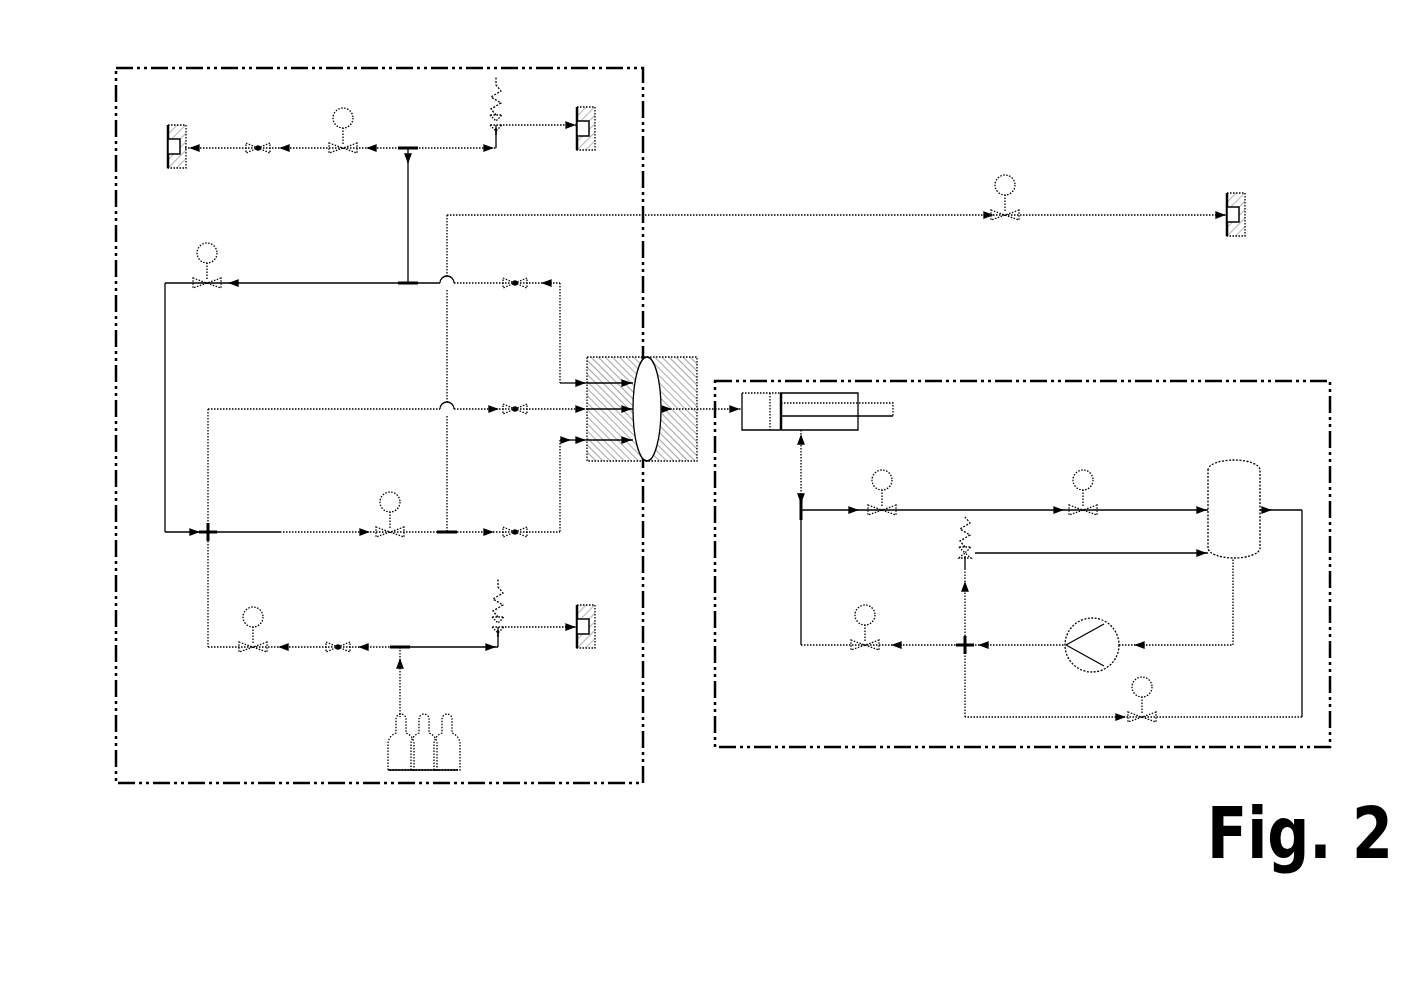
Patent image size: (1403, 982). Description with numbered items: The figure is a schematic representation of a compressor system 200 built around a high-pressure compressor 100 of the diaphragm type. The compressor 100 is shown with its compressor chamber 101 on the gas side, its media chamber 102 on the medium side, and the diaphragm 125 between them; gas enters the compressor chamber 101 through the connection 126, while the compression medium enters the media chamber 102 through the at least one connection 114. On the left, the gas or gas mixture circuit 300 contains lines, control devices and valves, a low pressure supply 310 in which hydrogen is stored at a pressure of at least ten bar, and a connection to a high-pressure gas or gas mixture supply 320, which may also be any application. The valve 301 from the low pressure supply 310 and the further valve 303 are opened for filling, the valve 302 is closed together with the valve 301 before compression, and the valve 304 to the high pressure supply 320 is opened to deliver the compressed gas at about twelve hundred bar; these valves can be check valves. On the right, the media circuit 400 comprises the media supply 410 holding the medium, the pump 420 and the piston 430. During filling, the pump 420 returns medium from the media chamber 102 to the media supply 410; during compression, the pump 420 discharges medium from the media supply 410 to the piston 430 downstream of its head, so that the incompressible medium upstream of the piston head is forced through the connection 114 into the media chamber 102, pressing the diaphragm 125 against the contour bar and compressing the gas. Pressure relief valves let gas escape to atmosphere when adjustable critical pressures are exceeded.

The high-pressure compressor 100 is at (744, 316).
The compressor chamber 101 is at (630, 370).
The media chamber 102 is at (682, 377).
The connection 114 is at (698, 410).
The diaphragm 125 is at (652, 430).
The connection 126 is at (562, 426).
The compressor system 200 is at (715, 170).
The gas or gas mixture circuit 300 is at (112, 361).
The valve 301 is at (341, 641).
The valve 302 is at (514, 403).
The valve 303 is at (514, 526).
The valve 304 is at (511, 291).
The low pressure gas or gas mixture supply 310 is at (395, 758).
The high-pressure gas or gas mixture supply 320 is at (167, 142).
The media circuit 400 is at (840, 800).
The media supply 410 is at (1228, 487).
The pump 420 is at (1100, 648).
The piston 430 is at (772, 436).